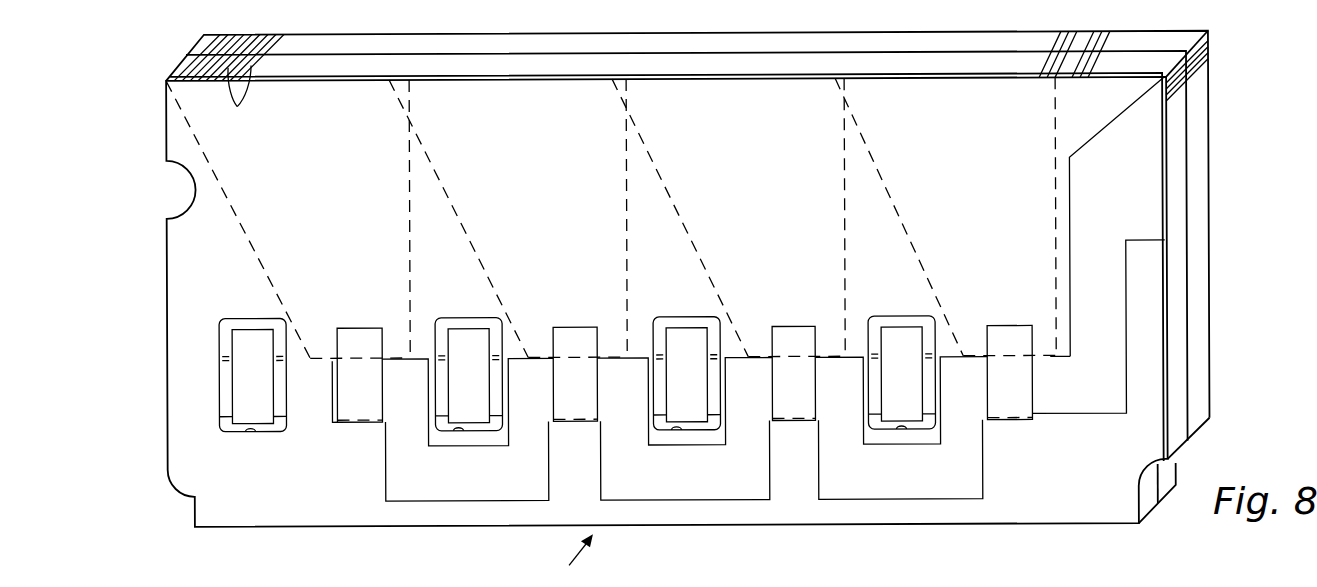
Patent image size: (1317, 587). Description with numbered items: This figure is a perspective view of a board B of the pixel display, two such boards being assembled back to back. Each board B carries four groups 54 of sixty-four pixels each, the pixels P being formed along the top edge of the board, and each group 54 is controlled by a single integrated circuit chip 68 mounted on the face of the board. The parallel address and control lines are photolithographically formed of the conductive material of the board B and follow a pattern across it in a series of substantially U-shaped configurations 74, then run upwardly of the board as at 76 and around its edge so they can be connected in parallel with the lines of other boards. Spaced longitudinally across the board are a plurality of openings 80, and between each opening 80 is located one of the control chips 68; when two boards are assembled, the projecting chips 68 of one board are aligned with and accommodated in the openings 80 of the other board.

The group 54 is at (296, 179).
The integrated circuit chip 68 is at (239, 396).
The substantially U-shaped configurations 74 is at (389, 412).
The upward portion of address and control lines 76 is at (1099, 195).
The openings 80 is at (250, 431).
The pixel P is at (241, 96).
The board B is at (575, 560).